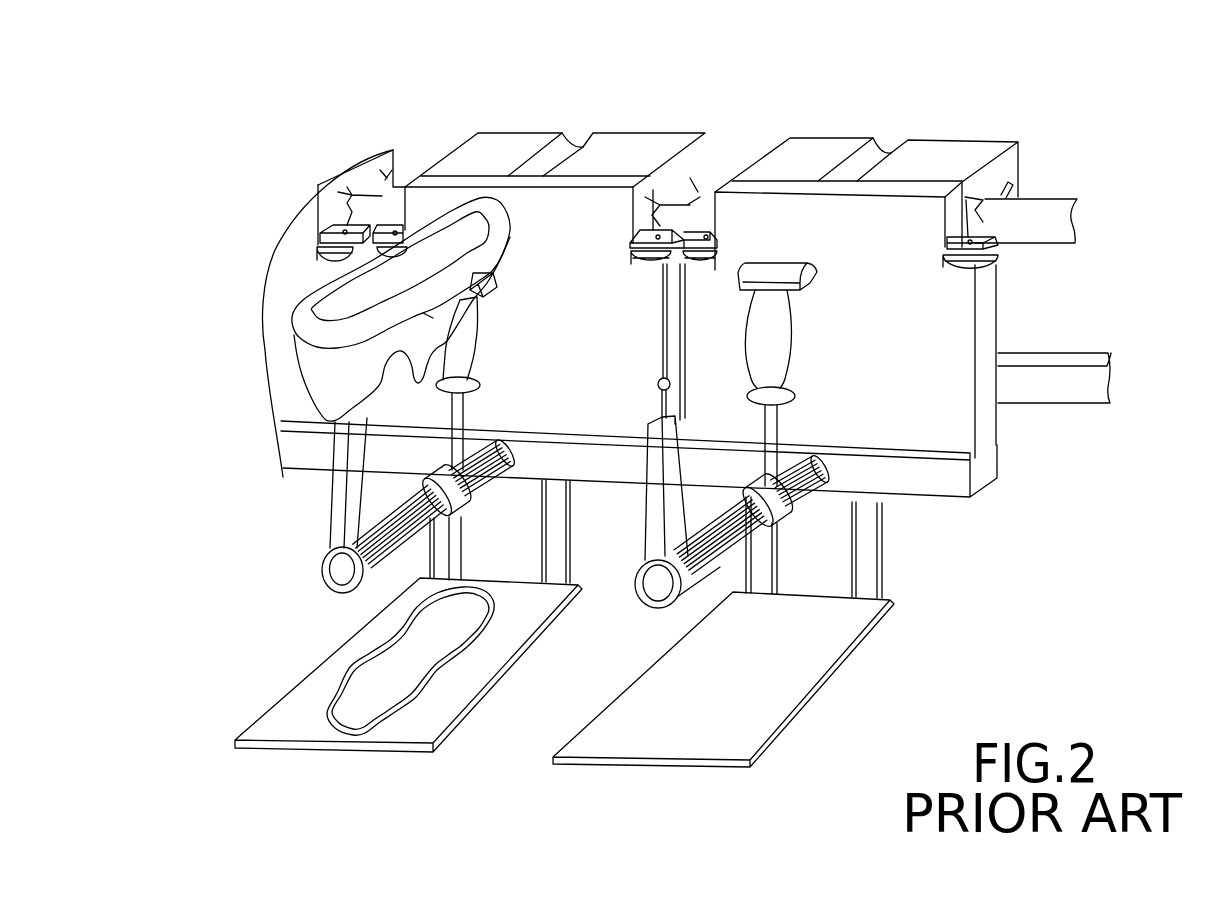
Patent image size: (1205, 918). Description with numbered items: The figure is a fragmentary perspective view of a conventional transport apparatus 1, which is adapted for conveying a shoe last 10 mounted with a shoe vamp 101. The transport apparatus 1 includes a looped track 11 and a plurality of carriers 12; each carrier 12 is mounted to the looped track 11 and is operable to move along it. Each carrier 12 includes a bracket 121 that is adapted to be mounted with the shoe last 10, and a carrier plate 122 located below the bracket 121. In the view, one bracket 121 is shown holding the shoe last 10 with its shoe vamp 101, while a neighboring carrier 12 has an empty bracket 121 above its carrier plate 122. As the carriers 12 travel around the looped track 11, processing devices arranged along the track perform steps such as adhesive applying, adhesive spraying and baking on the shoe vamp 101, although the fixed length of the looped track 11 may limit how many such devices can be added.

The transport apparatus 1 is at (982, 128).
The shoe last 10 is at (329, 332).
The shoe vamp 101 is at (303, 364).
The looped track 11 is at (1057, 222).
The carrier 12 is at (908, 225).
The bracket 121 is at (466, 347).
The carrier plate 122 is at (468, 686).